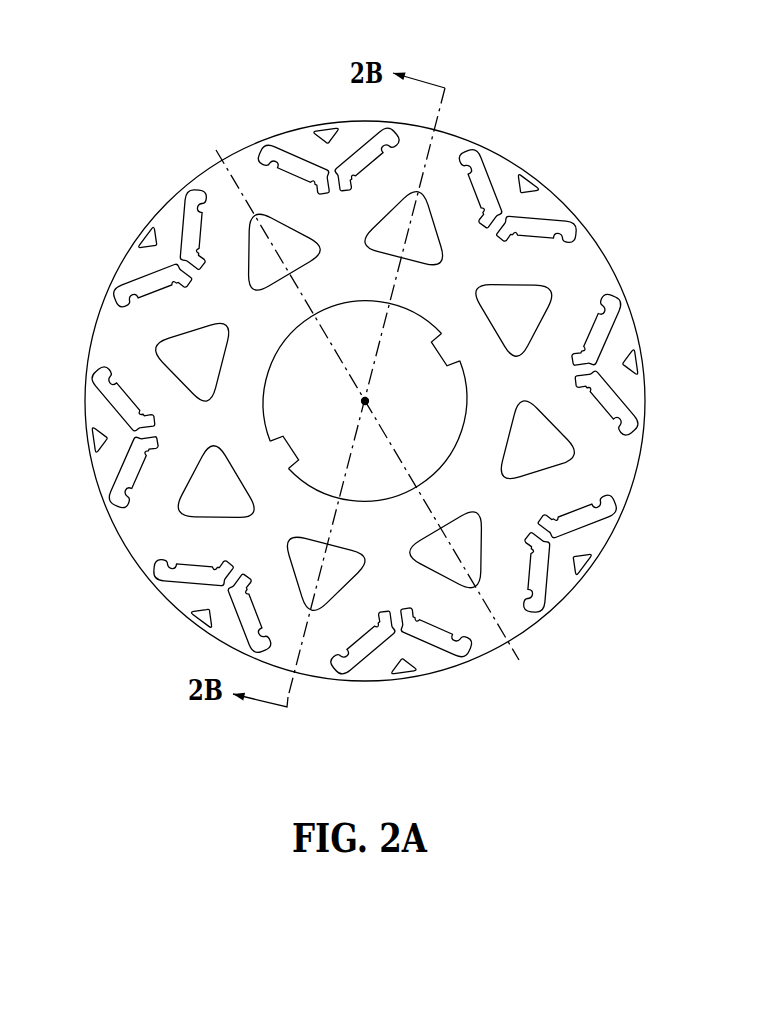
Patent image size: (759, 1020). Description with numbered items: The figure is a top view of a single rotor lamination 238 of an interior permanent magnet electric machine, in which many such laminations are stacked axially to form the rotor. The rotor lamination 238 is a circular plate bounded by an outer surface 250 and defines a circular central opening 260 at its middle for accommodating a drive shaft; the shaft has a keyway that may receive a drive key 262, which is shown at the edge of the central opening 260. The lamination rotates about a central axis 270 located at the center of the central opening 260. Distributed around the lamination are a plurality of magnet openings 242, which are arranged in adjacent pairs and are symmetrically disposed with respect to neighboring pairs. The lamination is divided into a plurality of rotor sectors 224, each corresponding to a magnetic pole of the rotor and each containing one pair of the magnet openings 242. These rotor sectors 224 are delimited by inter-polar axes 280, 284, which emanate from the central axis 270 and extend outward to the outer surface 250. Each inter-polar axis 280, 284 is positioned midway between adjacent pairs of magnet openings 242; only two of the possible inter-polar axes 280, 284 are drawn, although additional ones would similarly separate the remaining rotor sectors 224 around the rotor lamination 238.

The rotor lamination 238 is at (248, 166).
The magnet openings 242 is at (147, 290).
The rotor sectors 224 is at (357, 212).
The outer surface 250 is at (440, 675).
The circular central opening 260 is at (415, 311).
The drive key 262 is at (440, 355).
The central axis 270 is at (369, 401).
The inter-polar axis 280 is at (290, 697).
The inter-polar axis 284 is at (520, 662).